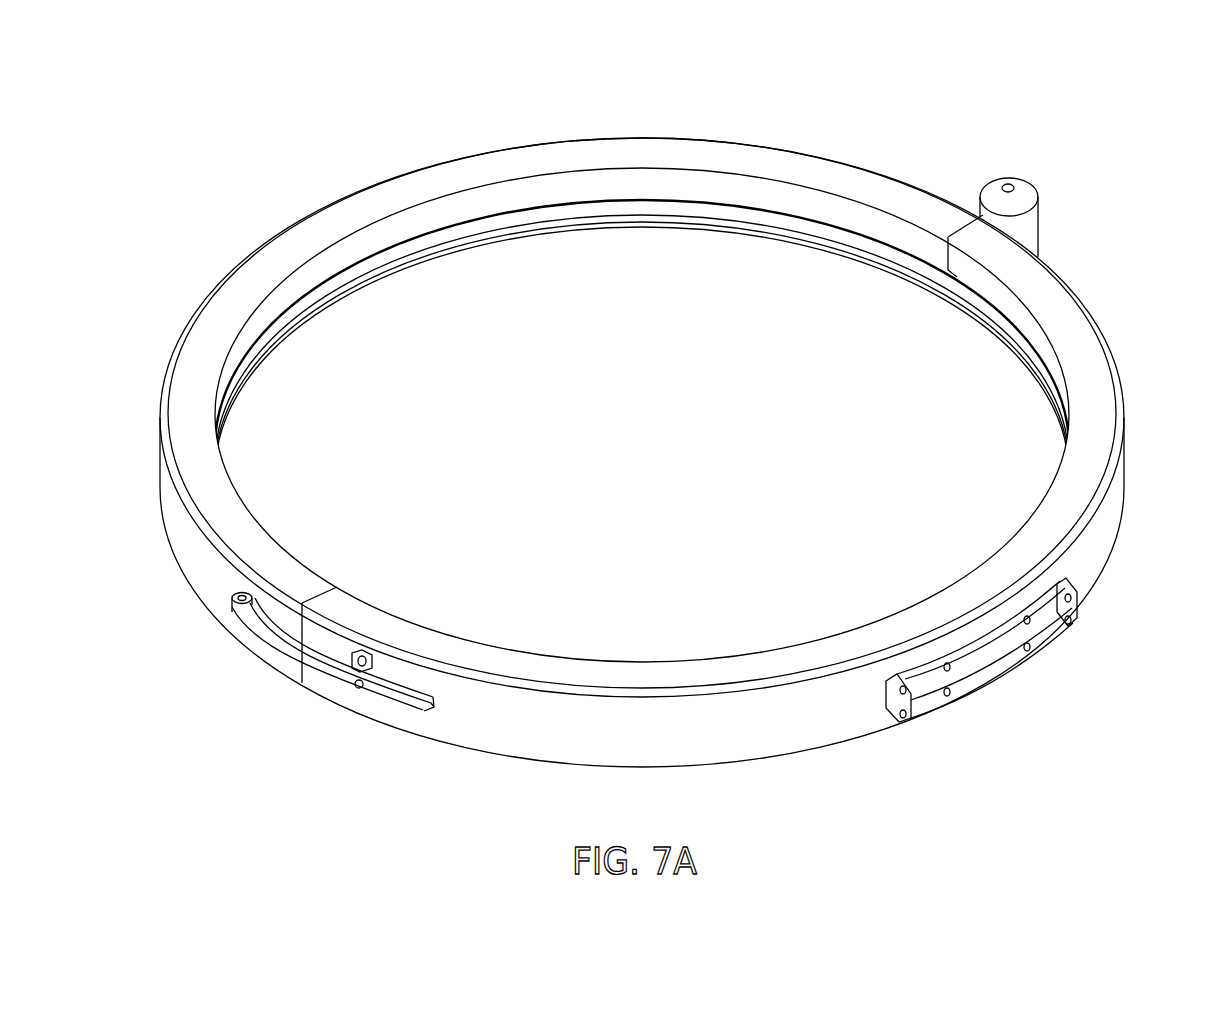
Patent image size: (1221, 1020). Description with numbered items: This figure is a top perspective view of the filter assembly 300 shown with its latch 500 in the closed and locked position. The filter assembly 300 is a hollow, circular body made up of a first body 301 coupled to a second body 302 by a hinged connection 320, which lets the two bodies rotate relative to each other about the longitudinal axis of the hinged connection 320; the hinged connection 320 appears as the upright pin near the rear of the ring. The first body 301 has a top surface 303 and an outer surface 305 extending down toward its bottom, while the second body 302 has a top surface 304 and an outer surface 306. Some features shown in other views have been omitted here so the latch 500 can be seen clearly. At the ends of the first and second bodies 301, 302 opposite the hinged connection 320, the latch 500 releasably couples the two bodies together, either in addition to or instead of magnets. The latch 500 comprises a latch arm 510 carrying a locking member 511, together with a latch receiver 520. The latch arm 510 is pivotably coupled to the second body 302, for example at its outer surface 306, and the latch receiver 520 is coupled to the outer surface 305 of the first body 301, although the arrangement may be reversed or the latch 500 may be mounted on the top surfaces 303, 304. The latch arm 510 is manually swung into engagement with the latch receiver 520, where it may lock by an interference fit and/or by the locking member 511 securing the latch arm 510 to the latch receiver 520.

The filter assembly 300 is at (653, 437).
The first body 301 is at (1127, 350).
The second body 302 is at (396, 175).
The top surface 303 is at (725, 668).
The top surface 304 is at (252, 527).
The outer surface 305 is at (835, 712).
The outer surface 306 is at (195, 552).
The hinged connection 320 is at (1037, 180).
The latch 500 is at (285, 660).
The latch arm 510 is at (237, 622).
The locking member 511 is at (365, 652).
The latch receiver 520 is at (360, 690).